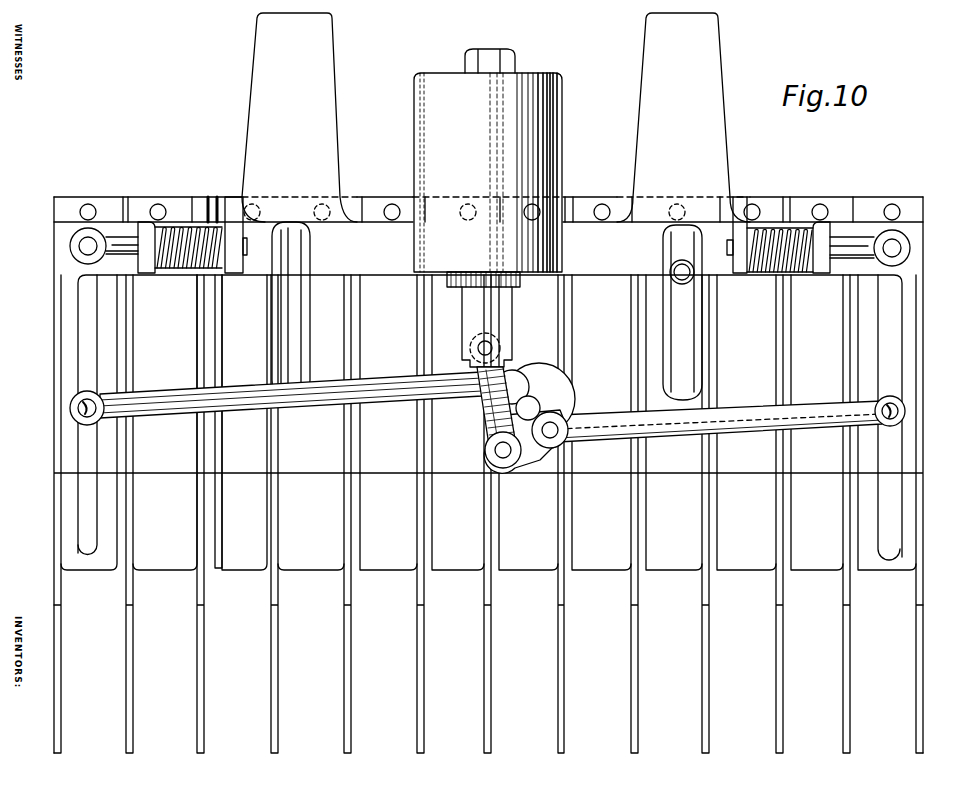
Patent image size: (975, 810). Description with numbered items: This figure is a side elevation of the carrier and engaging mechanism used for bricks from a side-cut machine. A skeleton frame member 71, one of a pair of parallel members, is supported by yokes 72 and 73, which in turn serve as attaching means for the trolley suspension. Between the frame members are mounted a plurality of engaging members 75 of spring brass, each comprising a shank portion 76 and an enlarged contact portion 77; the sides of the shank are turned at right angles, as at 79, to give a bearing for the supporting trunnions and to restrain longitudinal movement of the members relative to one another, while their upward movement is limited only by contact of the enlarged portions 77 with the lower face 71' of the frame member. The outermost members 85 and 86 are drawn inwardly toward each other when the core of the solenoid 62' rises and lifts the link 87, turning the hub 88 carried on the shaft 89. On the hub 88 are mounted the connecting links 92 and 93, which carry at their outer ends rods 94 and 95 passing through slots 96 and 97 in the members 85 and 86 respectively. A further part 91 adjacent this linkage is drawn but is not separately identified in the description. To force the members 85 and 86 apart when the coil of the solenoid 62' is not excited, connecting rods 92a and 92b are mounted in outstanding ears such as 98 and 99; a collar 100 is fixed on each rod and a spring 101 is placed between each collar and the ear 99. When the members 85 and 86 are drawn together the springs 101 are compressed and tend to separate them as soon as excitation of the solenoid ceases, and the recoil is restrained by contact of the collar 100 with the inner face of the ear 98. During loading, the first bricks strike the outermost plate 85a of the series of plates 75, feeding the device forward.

The solenoid 62' is at (488, 208).
The skeleton frame member 71 is at (488, 229).
The lower face of frame member 71' is at (831, 452).
The yoke 72 is at (299, 205).
The yoke 73 is at (683, 206).
The engaging member 75 is at (549, 405).
The shank portion 76 is at (726, 593).
The enlarged contact portion 77 is at (726, 650).
The turned side of shank portion 79 is at (598, 553).
The outermost engaging member 85 is at (62, 352).
The outermost plate 85a is at (55, 627).
The outermost engaging member 86 is at (915, 360).
The link 87 is at (497, 405).
The hub 88 is at (530, 368).
The shaft 89 is at (530, 410).
The disc edge 91 is at (545, 347).
The connecting link 92 is at (380, 388).
The connecting rod 92a is at (120, 238).
The connecting rod 92b is at (858, 243).
The connecting link 93 is at (757, 415).
The rod 94 is at (77, 414).
The rod 95 is at (900, 414).
The slot 96 is at (78, 312).
The slot 97 is at (905, 322).
The outstanding ear 98 is at (147, 233).
The outstanding ear 99 is at (234, 224).
The collar 100 is at (800, 272).
The spring 101 is at (778, 272).